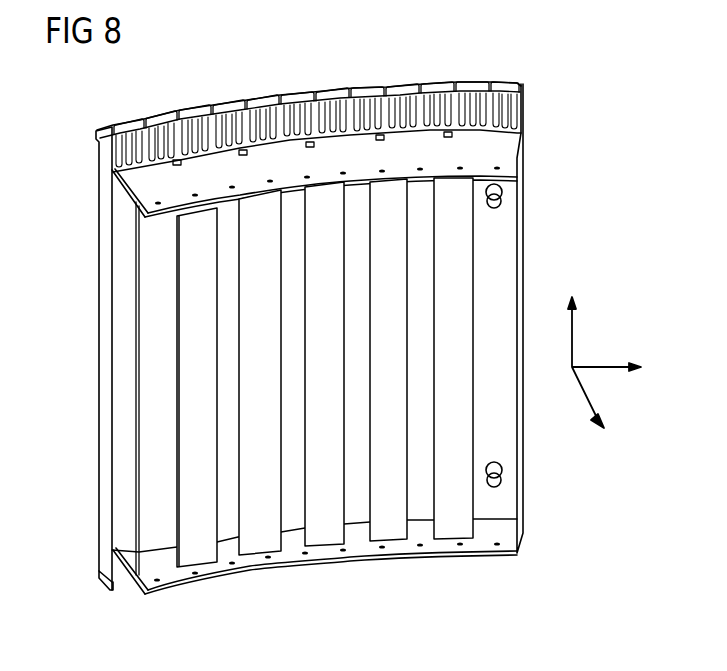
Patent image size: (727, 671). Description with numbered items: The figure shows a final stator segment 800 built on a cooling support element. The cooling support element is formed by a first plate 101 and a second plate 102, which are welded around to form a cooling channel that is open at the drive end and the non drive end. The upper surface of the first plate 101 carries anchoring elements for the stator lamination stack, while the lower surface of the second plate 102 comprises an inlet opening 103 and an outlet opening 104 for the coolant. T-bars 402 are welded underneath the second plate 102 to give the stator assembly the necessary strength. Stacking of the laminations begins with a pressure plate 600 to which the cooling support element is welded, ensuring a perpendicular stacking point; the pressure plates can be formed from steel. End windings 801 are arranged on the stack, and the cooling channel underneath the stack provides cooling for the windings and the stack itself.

The stator segment 800 is at (563, 116).
The end windings 801 is at (112, 127).
The pressure plate 600 is at (142, 189).
The outlet opening 104 is at (502, 204).
The inlet opening 103 is at (502, 480).
The T-bars 402 is at (458, 502).
The first plate 101 is at (120, 461).
The second plate 102 is at (147, 528).